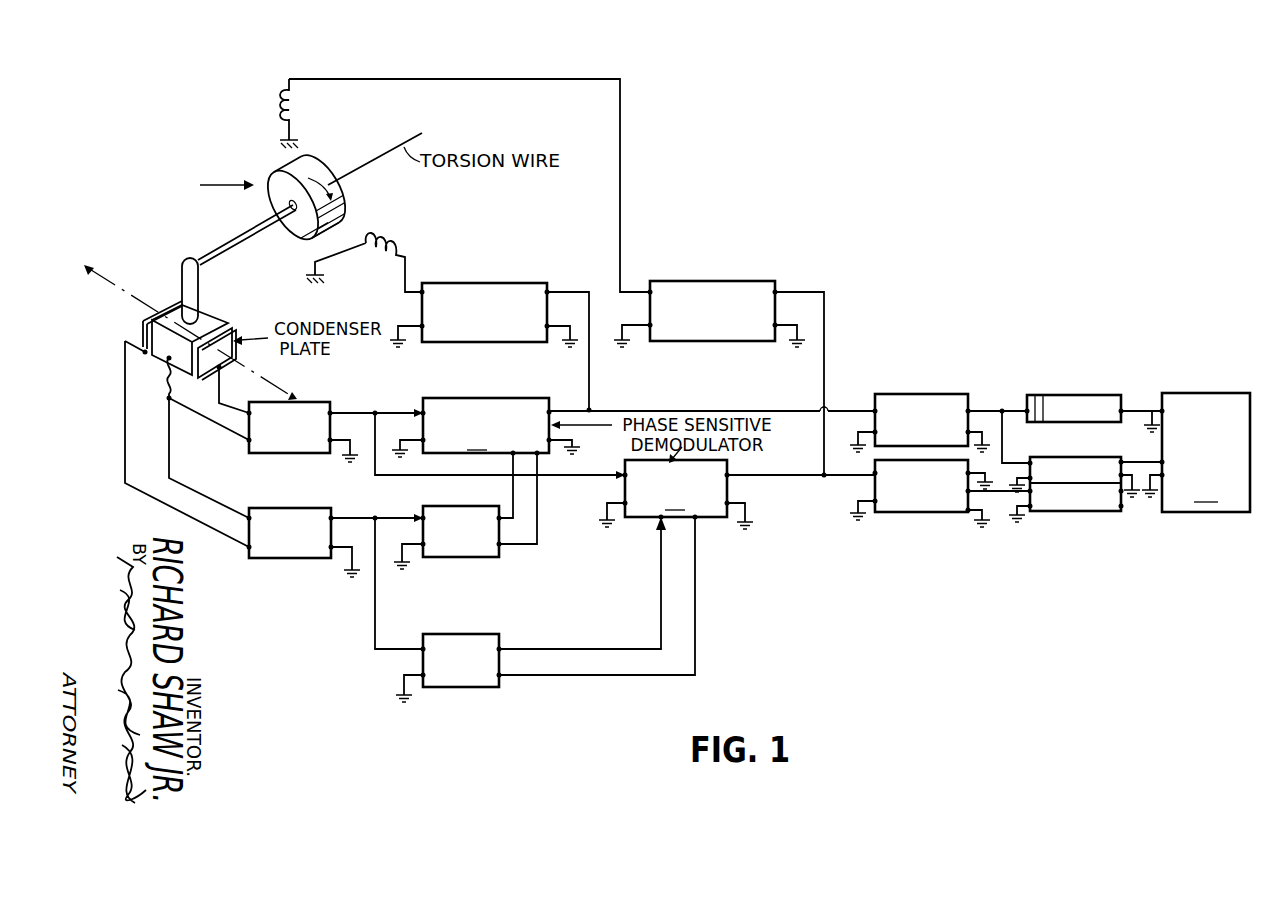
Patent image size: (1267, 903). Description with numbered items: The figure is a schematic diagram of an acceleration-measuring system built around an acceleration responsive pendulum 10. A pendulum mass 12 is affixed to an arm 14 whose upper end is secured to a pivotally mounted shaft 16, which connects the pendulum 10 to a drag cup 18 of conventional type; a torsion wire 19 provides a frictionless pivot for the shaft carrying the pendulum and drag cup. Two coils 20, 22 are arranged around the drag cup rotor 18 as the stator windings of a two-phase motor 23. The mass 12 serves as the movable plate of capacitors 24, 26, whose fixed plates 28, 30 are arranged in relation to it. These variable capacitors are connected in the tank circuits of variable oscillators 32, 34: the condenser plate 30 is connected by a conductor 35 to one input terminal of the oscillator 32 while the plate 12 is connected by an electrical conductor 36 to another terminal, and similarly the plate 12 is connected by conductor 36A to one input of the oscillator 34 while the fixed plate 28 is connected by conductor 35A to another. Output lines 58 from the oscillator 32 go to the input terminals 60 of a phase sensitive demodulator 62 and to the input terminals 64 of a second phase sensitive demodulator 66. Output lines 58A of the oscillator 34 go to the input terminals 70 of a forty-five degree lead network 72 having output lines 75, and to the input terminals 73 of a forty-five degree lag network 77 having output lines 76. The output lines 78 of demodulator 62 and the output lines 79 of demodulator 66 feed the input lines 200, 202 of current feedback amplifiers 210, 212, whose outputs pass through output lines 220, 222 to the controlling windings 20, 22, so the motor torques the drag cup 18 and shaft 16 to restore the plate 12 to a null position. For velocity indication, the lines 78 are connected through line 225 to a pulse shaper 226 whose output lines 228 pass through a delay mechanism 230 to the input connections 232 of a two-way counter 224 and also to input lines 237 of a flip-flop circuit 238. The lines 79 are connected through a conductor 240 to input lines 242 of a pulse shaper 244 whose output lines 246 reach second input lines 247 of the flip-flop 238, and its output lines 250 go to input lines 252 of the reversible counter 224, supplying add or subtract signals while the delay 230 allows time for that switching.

The acceleration responsive pendulum 10 is at (172, 262).
The pendulum mass 12 is at (163, 348).
The arm 14 is at (203, 290).
The shaft 16 is at (246, 232).
The drag cup 18 is at (290, 170).
The torsion wire 19 is at (367, 163).
The coil 20 is at (395, 247).
The coil 22 is at (280, 100).
The two-phase motor 23 is at (210, 185).
The variable capacitor 24 is at (142, 353).
The variable capacitor 26 is at (185, 384).
The fixed plate 28 is at (143, 320).
The fixed plate 30 is at (234, 355).
The variable oscillator 32 is at (288, 453).
The variable oscillator 34 is at (291, 558).
The conductor 35 is at (221, 380).
The electrical conductor 35A is at (125, 460).
The electrical conductor 36 is at (200, 417).
The electrical conductor 36A is at (203, 496).
The output lines 58 is at (337, 415).
The output lines 58A is at (338, 520).
The input terminals 60 is at (398, 419).
The phase sensitive demodulator 62 is at (486, 427).
The input terminals 64 is at (610, 503).
The phase sensitive demodulator 66 is at (676, 490).
The input terminals 70 is at (401, 527).
The forty-five degree lead network 72 is at (455, 557).
The input terminals 73 is at (402, 657).
The output lines 75 is at (535, 461).
The output lines 76 is at (693, 573).
The forty-five degree lag network 77 is at (458, 687).
The output lines 78 is at (572, 420).
The output lines 79 is at (735, 503).
The input line 200 is at (571, 327).
The input line 202 is at (797, 296).
The current feedback amplifier 210 is at (482, 283).
The current feedback amplifier 212 is at (708, 281).
The output line 220 is at (405, 322).
The output line 222 is at (636, 322).
The two-way counter 224 is at (1200, 391).
The line 225 is at (679, 409).
The pulse shaper 226 is at (916, 394).
The output lines 228 is at (975, 432).
The delay mechanism 230 is at (1068, 395).
The input connections 232 is at (1150, 415).
The input lines 237 is at (1016, 477).
The flip-flop circuit 238 is at (1075, 511).
The conductor 240 is at (783, 474).
The input lines 242 is at (846, 501).
The pulse shaper 244 is at (926, 512).
The output lines 246 is at (979, 492).
The second input lines 247 is at (1018, 512).
The output lines 250 is at (1128, 462).
The input lines 252 is at (1150, 500).